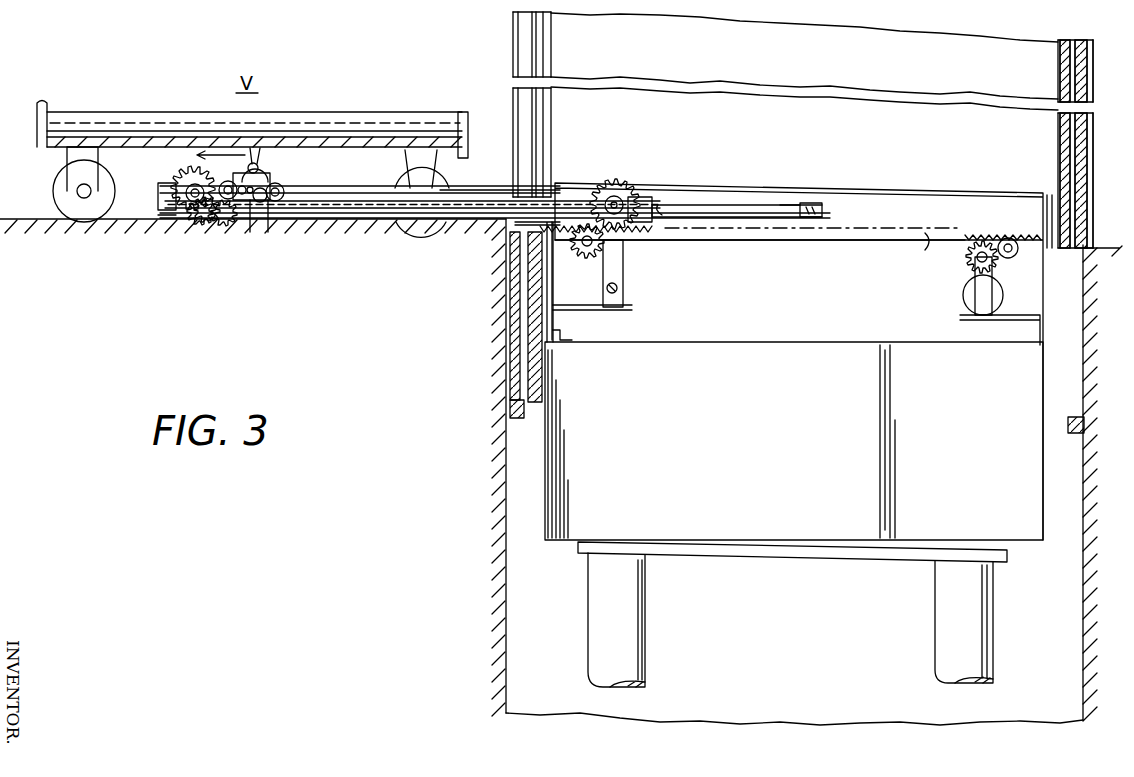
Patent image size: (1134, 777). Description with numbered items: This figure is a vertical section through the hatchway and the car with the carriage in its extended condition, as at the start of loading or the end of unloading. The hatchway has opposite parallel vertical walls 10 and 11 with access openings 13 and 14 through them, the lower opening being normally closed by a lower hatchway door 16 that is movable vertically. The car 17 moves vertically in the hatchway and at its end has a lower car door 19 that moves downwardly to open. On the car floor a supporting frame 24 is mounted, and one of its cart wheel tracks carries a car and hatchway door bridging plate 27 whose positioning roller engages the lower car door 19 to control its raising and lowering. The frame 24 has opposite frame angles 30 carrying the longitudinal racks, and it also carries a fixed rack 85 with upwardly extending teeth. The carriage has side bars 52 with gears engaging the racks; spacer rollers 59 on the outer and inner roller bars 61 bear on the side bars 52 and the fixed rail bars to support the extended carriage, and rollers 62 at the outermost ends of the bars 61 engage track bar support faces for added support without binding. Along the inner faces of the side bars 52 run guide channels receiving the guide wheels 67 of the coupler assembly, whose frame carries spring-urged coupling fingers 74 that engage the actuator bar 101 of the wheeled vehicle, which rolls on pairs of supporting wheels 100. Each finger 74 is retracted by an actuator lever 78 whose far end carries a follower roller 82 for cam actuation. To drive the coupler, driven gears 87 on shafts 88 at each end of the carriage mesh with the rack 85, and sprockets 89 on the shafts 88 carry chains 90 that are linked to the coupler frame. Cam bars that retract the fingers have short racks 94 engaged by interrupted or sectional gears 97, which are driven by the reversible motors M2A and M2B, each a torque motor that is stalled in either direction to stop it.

The vertical wall 10 is at (506, 504).
The vertical wall 11 is at (1083, 575).
The access opening 13 is at (513, 56).
The access opening 14 is at (1096, 158).
The lower hatchway door 16 is at (513, 290).
The car 17 is at (760, 386).
The lower car door 19 is at (528, 313).
The supporting frame 24 is at (553, 292).
The car and hatchway door bridging plate 27 is at (520, 245).
The frame angle 30 is at (740, 185).
The side bar 52 is at (158, 196).
The spacer roller 59 is at (735, 210).
The inner roller bar 61 is at (788, 205).
The roller 62 is at (812, 204).
The guide wheel 67 is at (232, 212).
The coupling finger 74 is at (262, 174).
The actuator lever 78 is at (250, 232).
The follower roller 82 is at (268, 232).
The rack 85 is at (928, 250).
The driven gear 87 is at (186, 176).
The shaft 88 is at (188, 216).
The sprocket 89 is at (198, 213).
The chain 90 is at (480, 190).
The short rack 94 is at (218, 222).
The interrupted or sectional gear 97 is at (612, 250).
The supporting wheel 100 is at (56, 193).
The impeller or actuator bar 101 is at (250, 166).
The reversible motor M2A is at (620, 288).
The reversible motor M2B is at (960, 300).